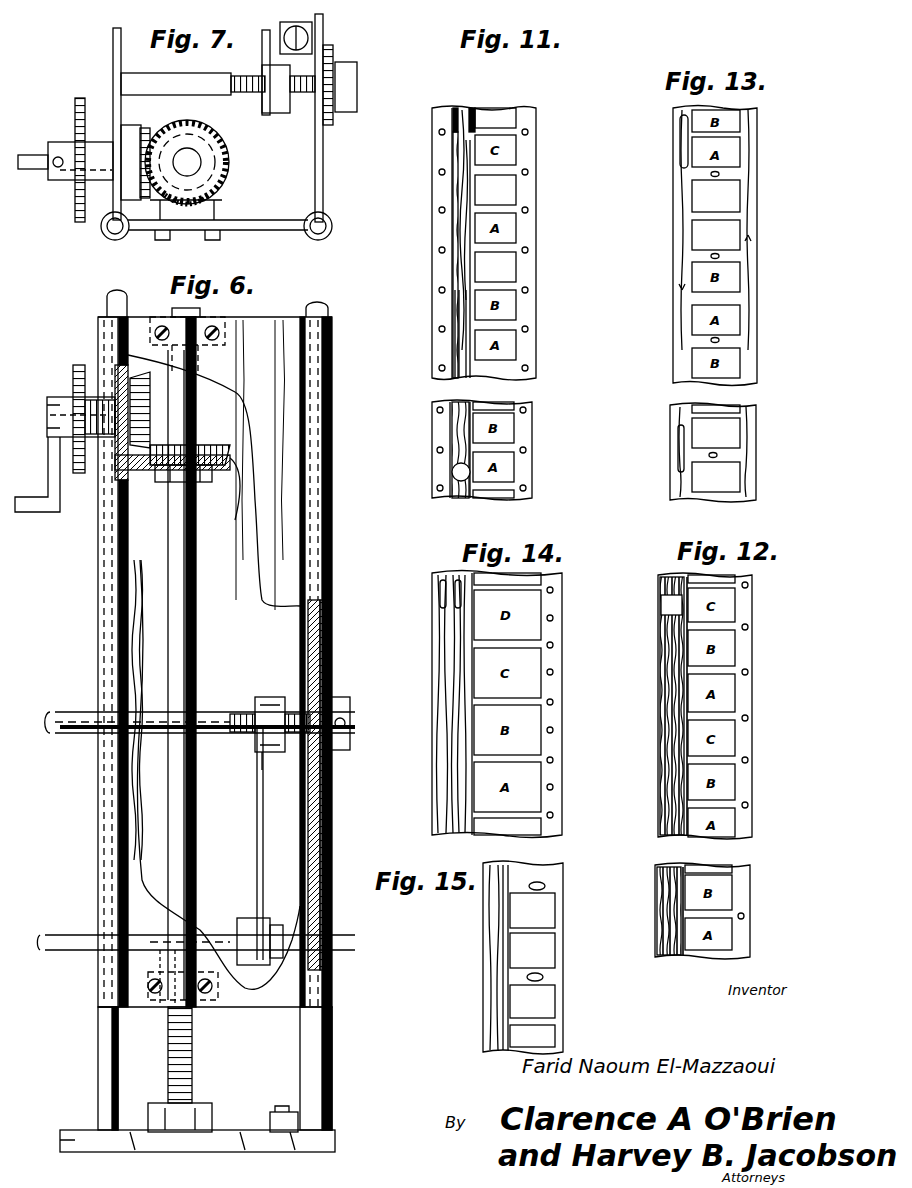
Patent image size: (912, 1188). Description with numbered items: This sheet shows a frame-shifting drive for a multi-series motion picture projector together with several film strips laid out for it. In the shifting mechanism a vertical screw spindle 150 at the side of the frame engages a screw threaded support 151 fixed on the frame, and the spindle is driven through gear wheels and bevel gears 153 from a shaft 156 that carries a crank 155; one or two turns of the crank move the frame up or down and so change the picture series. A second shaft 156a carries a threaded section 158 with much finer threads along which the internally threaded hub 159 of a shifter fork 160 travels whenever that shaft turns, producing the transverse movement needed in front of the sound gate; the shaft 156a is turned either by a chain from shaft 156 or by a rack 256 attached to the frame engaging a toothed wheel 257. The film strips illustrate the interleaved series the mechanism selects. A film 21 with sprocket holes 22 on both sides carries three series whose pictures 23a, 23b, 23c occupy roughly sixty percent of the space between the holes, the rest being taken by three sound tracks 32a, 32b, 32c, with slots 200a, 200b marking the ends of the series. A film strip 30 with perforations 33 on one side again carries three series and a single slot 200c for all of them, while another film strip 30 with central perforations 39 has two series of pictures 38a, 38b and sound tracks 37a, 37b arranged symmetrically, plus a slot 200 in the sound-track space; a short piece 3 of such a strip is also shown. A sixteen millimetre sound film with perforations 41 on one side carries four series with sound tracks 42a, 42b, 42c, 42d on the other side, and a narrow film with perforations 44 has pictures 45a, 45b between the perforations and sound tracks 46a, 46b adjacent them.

In FIG. 13, the film strip section 3 is at (675, 480).
In FIG. 11, the film 21 is at (530, 154).
In FIG. 11, the sprocket holes 22 is at (440, 172).
In FIG. 11, the pictures of series A 23a is at (515, 122).
In FIG. 11, the pictures of series B 23b is at (510, 204).
In FIG. 11, the pictures of series C 23c is at (515, 272).
In FIG. 13, the film strip 30 is at (708, 246).
In FIG. 12, the film strip 30 is at (745, 743).
In FIG. 11, the sound track 32a is at (455, 302).
In FIG. 11, the sound track 32b is at (460, 330).
In FIG. 11, the sound track 32c is at (468, 345).
In FIG. 12, the perforations 33 is at (748, 672).
In FIG. 13, the sound track 37a is at (750, 226).
In FIG. 13, the sound track 37b is at (678, 370).
In FIG. 13, the pictures of series A 38a is at (732, 198).
In FIG. 13, the pictures of series B 38b is at (727, 240).
In FIG. 13, the central perforations 39 is at (720, 176).
In FIG. 14, the perforations 41 is at (555, 704).
In FIG. 14, the sound track 42a is at (440, 804).
In FIG. 14, the sound track 42b is at (450, 736).
In FIG. 14, the sound track 42c is at (457, 708).
In FIG. 14, the sound track 42d is at (463, 754).
In FIG. 15, the perforations 44 is at (545, 886).
In FIG. 15, the pictures of series A 45a is at (550, 912).
In FIG. 15, the pictures of series B 45b is at (550, 950).
In FIG. 15, the sound track 46a is at (488, 998).
In FIG. 15, the sound track 46b is at (497, 1030).
In FIG. 6, the vertical screw spindle 150 is at (192, 1071).
In FIG. 6, the screw threaded support 151 is at (205, 995).
In FIG. 7, the bevel gears 153 is at (232, 165).
In FIG. 6, the bevel gears 153 is at (150, 412).
In FIG. 7, the crank 155 is at (28, 170).
In FIG. 6, the crank 155 is at (43, 500).
In FIG. 7, the shaft 156 is at (101, 142).
In FIG. 6, the shaft 156 is at (100, 397).
In FIG. 6, the shaft 156a is at (215, 712).
In FIG. 6, the threaded section 158 is at (247, 642).
In FIG. 6, the internally threaded hub 159 is at (275, 752).
In FIG. 6, the shifter fork 160 is at (258, 823).
In FIG. 13, the slot 200 is at (680, 150).
In FIG. 11, the slot 200a is at (460, 112).
In FIG. 11, the slot 200b is at (473, 110).
In FIG. 11, the slot 200c is at (452, 473).
In FIG. 12, the slot 200c is at (660, 611).
In FIG. 6, the rack 256 is at (328, 836).
In FIG. 6, the toothed wheel 257 is at (330, 698).